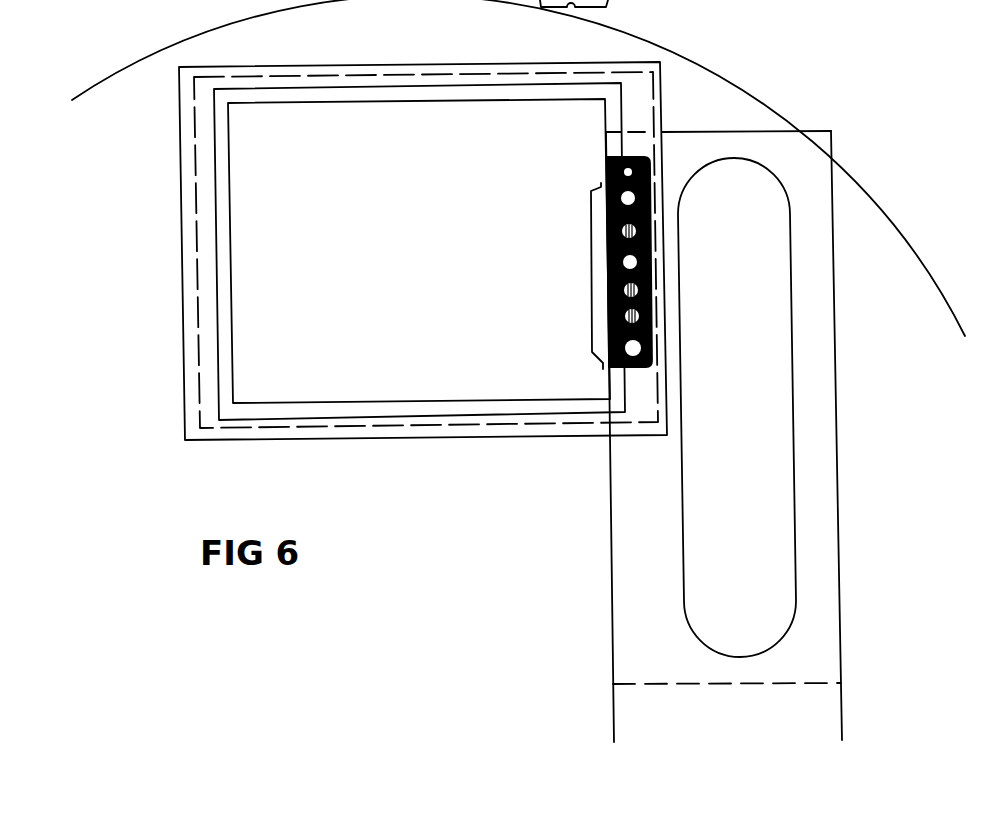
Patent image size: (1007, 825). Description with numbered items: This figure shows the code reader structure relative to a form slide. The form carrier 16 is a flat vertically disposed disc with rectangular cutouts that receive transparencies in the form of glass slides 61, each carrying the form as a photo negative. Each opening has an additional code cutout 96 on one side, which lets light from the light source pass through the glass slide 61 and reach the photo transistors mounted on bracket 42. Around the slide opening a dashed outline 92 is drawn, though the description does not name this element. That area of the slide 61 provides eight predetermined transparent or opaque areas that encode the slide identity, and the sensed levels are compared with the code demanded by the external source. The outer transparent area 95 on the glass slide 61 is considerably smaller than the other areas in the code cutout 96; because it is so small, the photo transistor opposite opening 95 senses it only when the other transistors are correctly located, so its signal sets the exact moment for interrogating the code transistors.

The form carrier 16 is at (207, 32).
The bracket 42 is at (836, 409).
The glass slide 61 is at (411, 262).
The gasket 92 is at (402, 75).
The outer transparent area 95 is at (627, 157).
The code cutout 96 is at (592, 261).